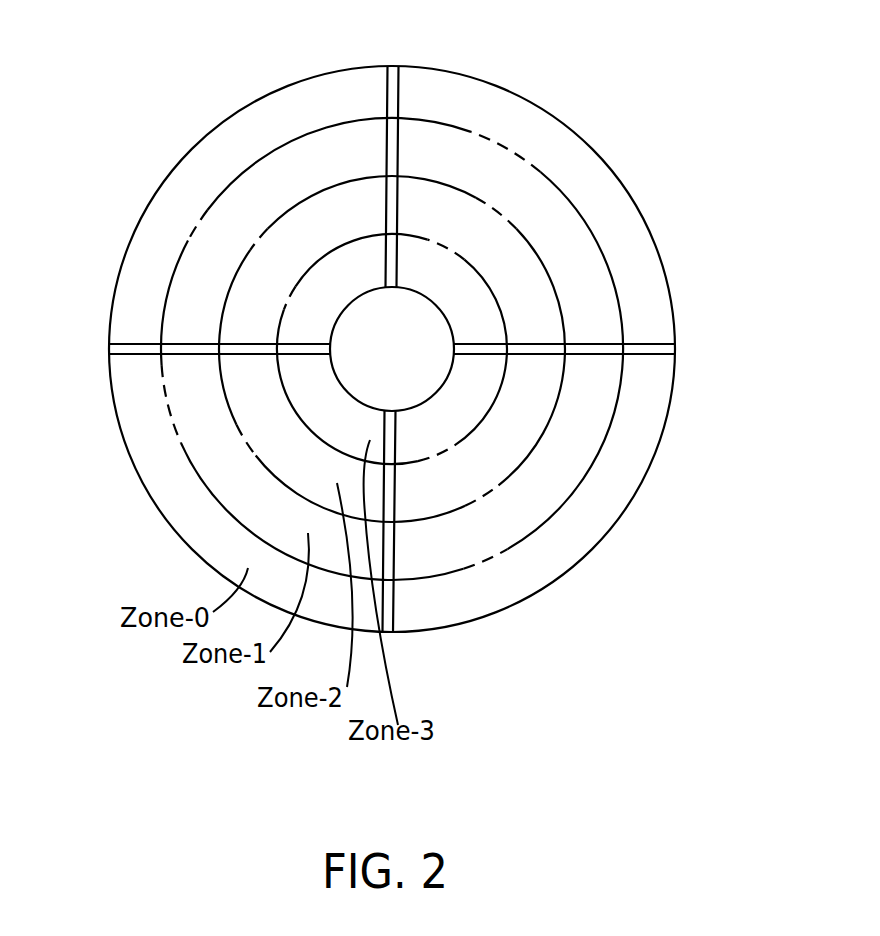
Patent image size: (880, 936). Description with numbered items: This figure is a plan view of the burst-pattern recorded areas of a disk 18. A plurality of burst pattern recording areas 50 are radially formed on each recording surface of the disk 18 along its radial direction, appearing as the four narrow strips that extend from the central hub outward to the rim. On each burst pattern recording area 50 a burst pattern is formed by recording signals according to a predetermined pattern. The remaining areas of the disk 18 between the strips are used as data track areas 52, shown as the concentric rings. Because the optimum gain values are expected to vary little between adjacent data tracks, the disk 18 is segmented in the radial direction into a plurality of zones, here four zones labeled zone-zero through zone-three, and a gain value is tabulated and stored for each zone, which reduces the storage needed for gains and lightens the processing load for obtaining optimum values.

The disk 18 is at (605, 158).
The burst pattern recording area 50 is at (392, 66).
The data track area 52 is at (223, 135).